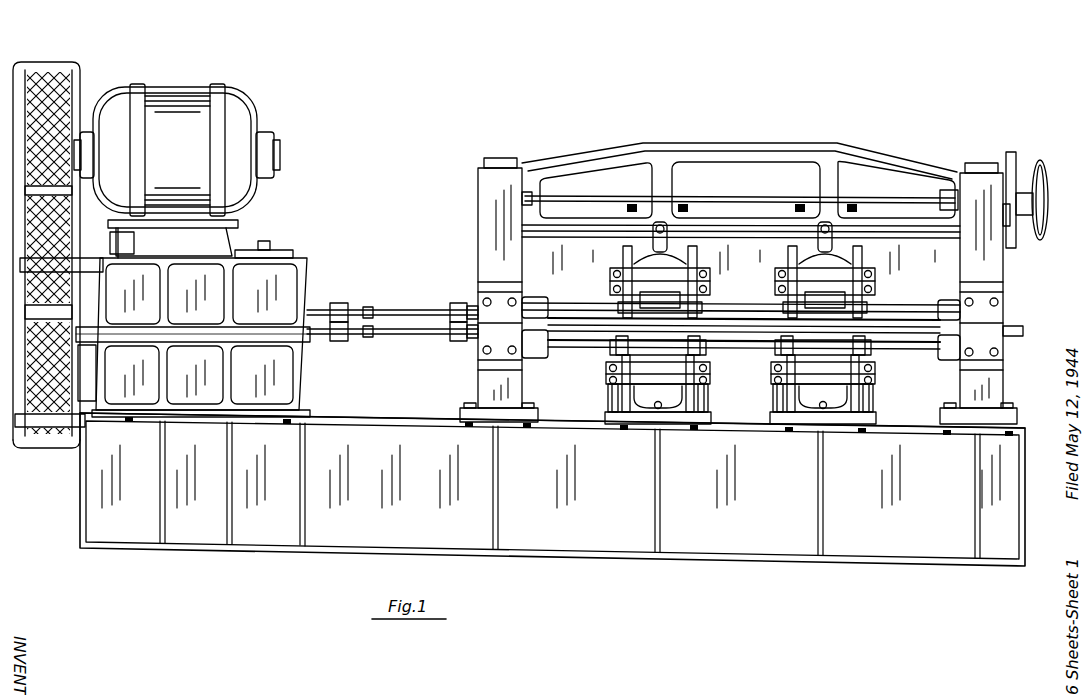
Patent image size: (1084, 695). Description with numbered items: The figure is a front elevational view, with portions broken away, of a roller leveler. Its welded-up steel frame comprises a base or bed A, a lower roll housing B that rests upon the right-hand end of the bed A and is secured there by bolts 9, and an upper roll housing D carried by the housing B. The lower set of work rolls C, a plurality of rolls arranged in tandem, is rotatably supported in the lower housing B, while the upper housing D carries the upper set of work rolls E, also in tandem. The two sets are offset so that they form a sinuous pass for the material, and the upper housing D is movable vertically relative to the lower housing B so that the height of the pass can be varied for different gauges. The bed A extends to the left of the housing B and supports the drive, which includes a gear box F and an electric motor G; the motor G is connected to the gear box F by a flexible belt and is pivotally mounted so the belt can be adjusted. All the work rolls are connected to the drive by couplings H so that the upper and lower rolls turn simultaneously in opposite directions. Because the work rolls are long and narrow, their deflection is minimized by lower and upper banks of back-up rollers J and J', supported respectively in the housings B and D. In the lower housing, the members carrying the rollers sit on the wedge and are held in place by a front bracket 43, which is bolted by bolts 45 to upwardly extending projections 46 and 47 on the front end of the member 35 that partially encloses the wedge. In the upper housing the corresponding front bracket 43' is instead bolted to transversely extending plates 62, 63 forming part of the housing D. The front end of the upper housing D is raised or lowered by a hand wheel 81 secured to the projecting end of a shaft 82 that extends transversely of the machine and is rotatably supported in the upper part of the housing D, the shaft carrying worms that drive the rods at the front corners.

The base or bed A is at (716, 550).
The lower roll housing B is at (478, 395).
The lower set of work rolls C is at (901, 332).
The upper roll housing D is at (736, 158).
The upper set of work rolls E is at (902, 318).
The gear box F is at (296, 270).
The electric motor G is at (188, 87).
The couplings H is at (394, 318).
The lower back-up rollers J is at (744, 337).
The upper back-up rollers J' is at (744, 317).
The bolts 9 is at (528, 428).
The member 35 is at (830, 422).
The front bracket 43 is at (884, 396).
The front bracket 43' is at (756, 270).
The bolts 45 is at (772, 367).
The upwardly extending projection 46 is at (866, 404).
The upwardly extending projection 47 is at (774, 396).
The plate 62 is at (754, 265).
The plate 63 is at (947, 265).
The hand wheel 81 is at (1046, 185).
The shaft 82 is at (739, 205).